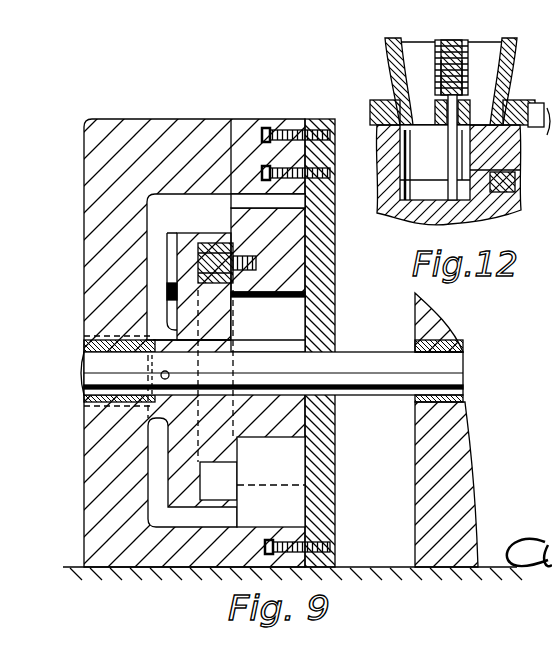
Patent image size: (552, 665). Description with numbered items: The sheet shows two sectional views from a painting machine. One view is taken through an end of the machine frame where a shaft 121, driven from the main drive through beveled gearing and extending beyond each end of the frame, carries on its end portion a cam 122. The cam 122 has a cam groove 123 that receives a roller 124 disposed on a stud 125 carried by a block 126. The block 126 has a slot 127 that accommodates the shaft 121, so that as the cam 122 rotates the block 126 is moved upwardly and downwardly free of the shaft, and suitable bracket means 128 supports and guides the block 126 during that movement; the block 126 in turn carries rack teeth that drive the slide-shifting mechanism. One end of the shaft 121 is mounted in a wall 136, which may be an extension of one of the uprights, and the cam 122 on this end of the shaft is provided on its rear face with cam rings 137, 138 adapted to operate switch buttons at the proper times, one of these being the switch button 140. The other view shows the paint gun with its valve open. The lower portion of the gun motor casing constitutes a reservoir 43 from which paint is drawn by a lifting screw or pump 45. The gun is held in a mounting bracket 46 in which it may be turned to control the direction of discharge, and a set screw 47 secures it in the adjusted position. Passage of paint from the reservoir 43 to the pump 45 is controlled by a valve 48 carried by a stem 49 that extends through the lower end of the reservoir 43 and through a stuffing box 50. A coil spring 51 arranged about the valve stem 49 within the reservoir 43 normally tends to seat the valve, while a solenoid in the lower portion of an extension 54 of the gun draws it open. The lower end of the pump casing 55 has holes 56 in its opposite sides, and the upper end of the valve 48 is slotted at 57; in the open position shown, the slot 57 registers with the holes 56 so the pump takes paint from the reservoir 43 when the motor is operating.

In FIG. 9, the shaft 121 is at (367, 361).
In FIG. 9, the cam 122 is at (188, 247).
In FIG. 9, the cam groove 123 is at (207, 247).
In FIG. 9, the roller 124 is at (225, 285).
In FIG. 9, the stud 125 is at (260, 283).
In FIG. 9, the block 126 is at (333, 272).
In FIG. 9, the slot 127 is at (293, 342).
In FIG. 9, the bracket means 128 is at (337, 208).
In FIG. 9, the wall 136 is at (90, 416).
In FIG. 9, the cam ring 137 is at (168, 508).
In FIG. 9, the cam ring 138 is at (170, 290).
In FIG. 9, the switch button 140 is at (124, 336).
In FIG. 12, the reservoir 43 is at (480, 85).
In FIG. 12, the lifting screw 45 is at (450, 40).
In FIG. 12, the mounting bracket 46 is at (390, 143).
In FIG. 12, the set screw 47 is at (512, 178).
In FIG. 12, the valve 48 is at (440, 100).
In FIG. 12, the valve stem 49 is at (445, 225).
In FIG. 12, the stuffing box 50 is at (435, 165).
In FIG. 12, the coil spring 51 is at (462, 100).
In FIG. 12, the extension 54 is at (388, 200).
In FIG. 12, the pump casing 55 is at (435, 55).
In FIG. 12, the holes 56 is at (442, 88).
In FIG. 12, the slot 57 is at (470, 50).